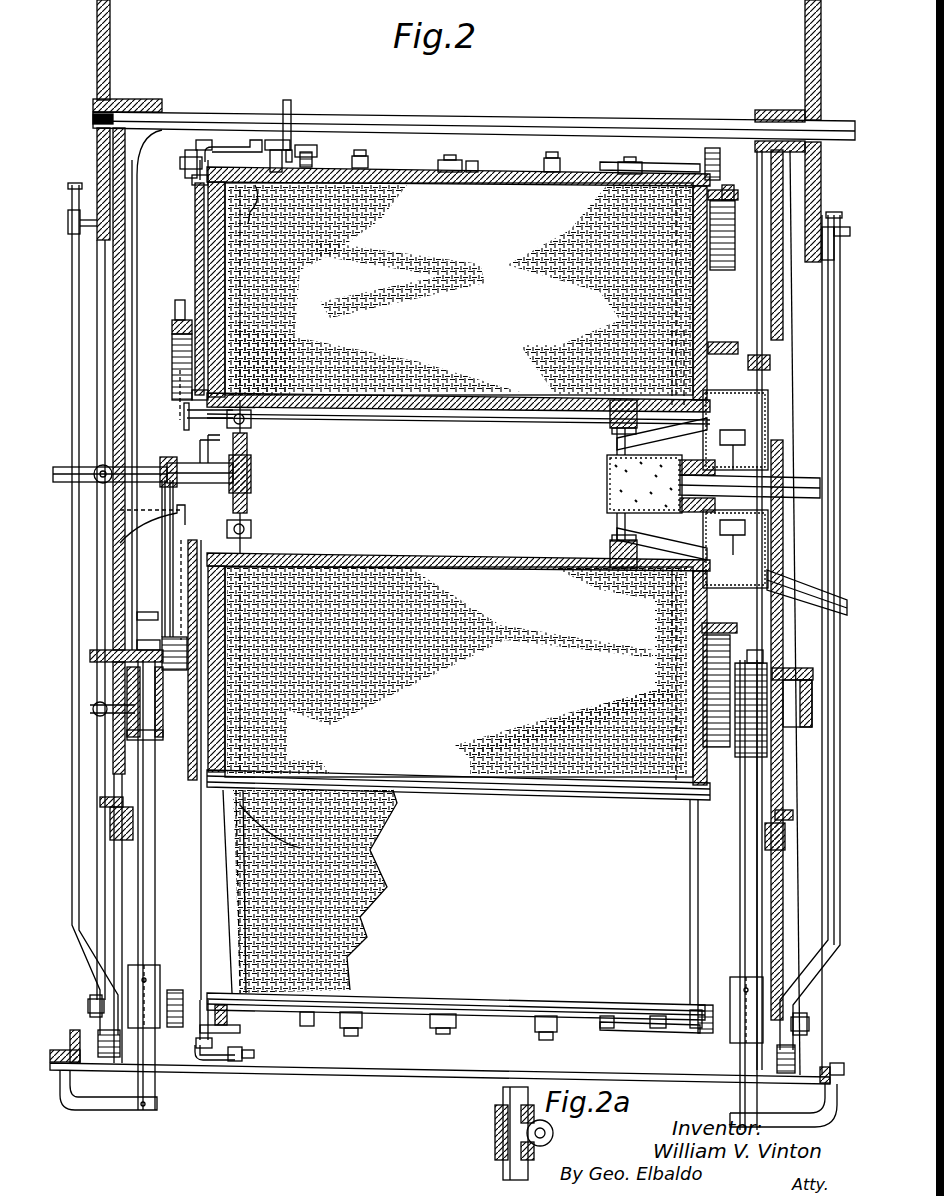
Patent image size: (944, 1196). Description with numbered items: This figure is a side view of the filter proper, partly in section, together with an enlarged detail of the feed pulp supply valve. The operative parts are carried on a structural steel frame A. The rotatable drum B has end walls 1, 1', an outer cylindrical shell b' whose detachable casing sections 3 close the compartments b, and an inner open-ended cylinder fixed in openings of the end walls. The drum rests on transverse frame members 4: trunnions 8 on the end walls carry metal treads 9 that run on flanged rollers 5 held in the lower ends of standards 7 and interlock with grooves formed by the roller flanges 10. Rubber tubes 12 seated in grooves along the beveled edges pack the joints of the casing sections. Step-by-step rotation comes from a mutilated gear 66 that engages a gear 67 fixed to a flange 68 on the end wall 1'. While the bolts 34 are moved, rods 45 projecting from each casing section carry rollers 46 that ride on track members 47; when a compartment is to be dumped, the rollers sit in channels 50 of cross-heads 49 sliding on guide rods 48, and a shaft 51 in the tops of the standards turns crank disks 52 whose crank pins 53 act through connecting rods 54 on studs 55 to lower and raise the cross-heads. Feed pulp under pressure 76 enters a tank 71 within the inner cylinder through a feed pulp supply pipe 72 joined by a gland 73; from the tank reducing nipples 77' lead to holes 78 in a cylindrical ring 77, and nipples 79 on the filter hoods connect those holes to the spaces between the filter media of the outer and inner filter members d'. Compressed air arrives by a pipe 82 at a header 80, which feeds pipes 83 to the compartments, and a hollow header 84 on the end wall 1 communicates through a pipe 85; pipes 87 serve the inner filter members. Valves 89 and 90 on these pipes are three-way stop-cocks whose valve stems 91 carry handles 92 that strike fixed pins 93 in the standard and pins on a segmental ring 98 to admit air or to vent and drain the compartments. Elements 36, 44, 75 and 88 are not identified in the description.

In FIG. 2, the end wall 1 is at (493, 359).
In FIG. 2, the end wall 1' is at (458, 669).
In FIG. 2, the casing section 3 is at (185, 387).
In FIG. 2, the transverse frame member 4 is at (797, 728).
In FIG. 2, the flanged roller 5 is at (793, 593).
In FIG. 2, the standard 7 is at (128, 258).
In FIG. 2, the trunnion 8 is at (172, 345).
In FIG. 2, the metal tread 9 is at (172, 312).
In FIG. 2, the flange 10 is at (475, 650).
In FIG. 2, the rubber tube 12 is at (450, 788).
In FIG. 2, the bolt 34 is at (440, 1040).
In FIG. 2, the clip 36 is at (538, 596).
In FIG. 2, the fastening lug 44 is at (370, 1034).
In FIG. 2, the rod 45 is at (672, 166).
In FIG. 2, the roller 46 is at (180, 1080).
In FIG. 2, the track member 47 is at (724, 820).
In FIG. 2, the guide rod 48 is at (447, 895).
In FIG. 2, the cross-head 49 is at (177, 1027).
In FIG. 2, the channel 50 is at (160, 975).
In FIG. 2, the shaft 51 is at (254, 112).
In FIG. 2, the crank disk 52 is at (110, 56).
In FIG. 2, the crank pin 53 is at (96, 214).
In FIG. 2, the connecting rod 54 is at (73, 330).
In FIG. 2, the stud 55 is at (90, 1005).
In FIG. 2, the mutilated gear 66 is at (700, 792).
In FIG. 2, the gear 67 is at (728, 186).
In FIG. 2, the flange 68 is at (732, 214).
In FIG. 2, the tank 71 is at (606, 468).
In FIG. 2, the feed pulp supply pipe 72 is at (198, 462).
In FIG. 2, the gland 73 is at (720, 470).
In FIG. 2, the lower valve box 75 is at (736, 549).
In FIG. 2, the feed pulp under pressure 76 is at (736, 497).
In FIG. 2, the cylindrical ring 77 is at (722, 486).
In FIG. 2A, the cylindrical ring 77 is at (501, 1132).
In FIG. 2, the reducing nipple 77' is at (550, 383).
In FIG. 2, the hole 78 is at (612, 560).
In FIG. 2, the nipple 79 is at (630, 412).
In FIG. 2, the header 80 is at (248, 502).
In FIG. 2, the pipe 82 is at (62, 466).
In FIG. 2, the pipe 83 is at (240, 410).
In FIG. 2, the hollow header 84 is at (165, 712).
In FIG. 2, the pipe 85 is at (200, 415).
In FIG. 2, the pipe 87 is at (200, 152).
In FIG. 2, the pipe 88 is at (196, 183).
In FIG. 2, the valve 89 is at (196, 207).
In FIG. 2, the valve 90 is at (262, 140).
In FIG. 2, the valve stem 91 is at (267, 1088).
In FIG. 2, the handle 92 is at (292, 110).
In FIG. 2, the fixed pin 93 is at (152, 524).
In FIG. 2, the segmental ring 98 is at (290, 140).
In FIG. 2, the frame A is at (790, 903).
In FIG. 2, the drum B is at (392, 166).
In FIG. 2, the compartment b is at (444, 423).
In FIG. 2, the outer cylindrical shell b' is at (522, 479).
In FIG. 2, the inner filter member d' is at (581, 1039).